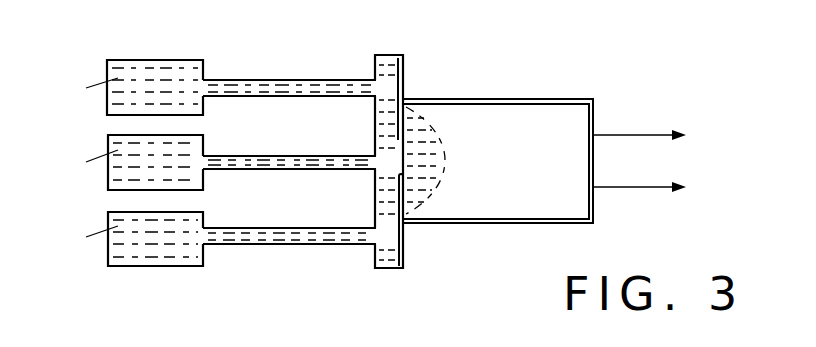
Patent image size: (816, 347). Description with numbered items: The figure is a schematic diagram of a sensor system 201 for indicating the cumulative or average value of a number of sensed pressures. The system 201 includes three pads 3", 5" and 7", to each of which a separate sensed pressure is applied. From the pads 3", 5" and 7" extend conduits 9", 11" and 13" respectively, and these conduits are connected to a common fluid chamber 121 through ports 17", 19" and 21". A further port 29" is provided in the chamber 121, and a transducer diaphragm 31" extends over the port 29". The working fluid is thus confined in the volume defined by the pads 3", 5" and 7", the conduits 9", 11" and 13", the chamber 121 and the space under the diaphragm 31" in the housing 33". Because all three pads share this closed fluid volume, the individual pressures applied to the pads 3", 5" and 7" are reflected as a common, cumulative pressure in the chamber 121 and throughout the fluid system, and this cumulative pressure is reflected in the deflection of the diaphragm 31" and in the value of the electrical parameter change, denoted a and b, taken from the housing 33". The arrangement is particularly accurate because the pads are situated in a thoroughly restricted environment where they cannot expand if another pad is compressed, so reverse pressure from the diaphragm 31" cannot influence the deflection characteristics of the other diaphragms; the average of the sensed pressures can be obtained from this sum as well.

The pad 3 is at (203, 61).
The pad 5 is at (204, 135).
The pad 7 is at (205, 212).
The conduit 9 is at (238, 79).
The conduit 11 is at (242, 155).
The conduit 13 is at (240, 228).
The port 17 is at (373, 78).
The port 19 is at (375, 155).
The port 21 is at (375, 228).
The port 29 is at (401, 182).
The transducer diaphragm 31 is at (432, 131).
The housing 33 is at (517, 99).
The common fluid chamber 121 is at (406, 267).
The sensor system 201 is at (252, 256).